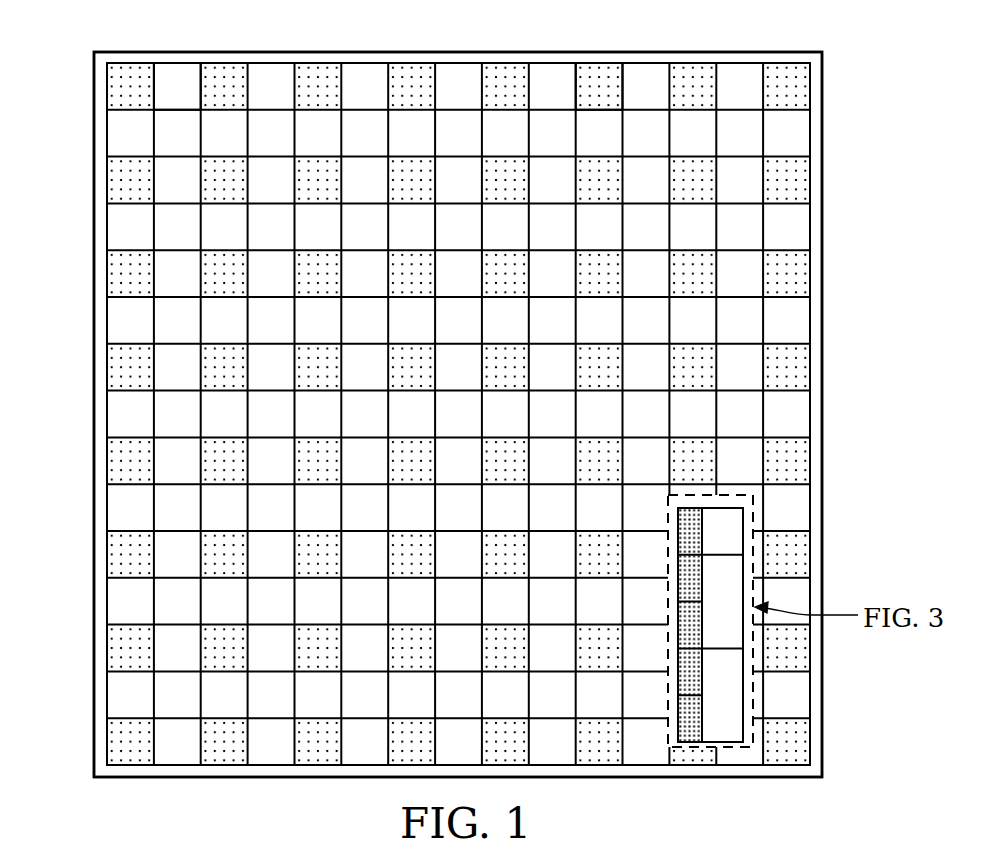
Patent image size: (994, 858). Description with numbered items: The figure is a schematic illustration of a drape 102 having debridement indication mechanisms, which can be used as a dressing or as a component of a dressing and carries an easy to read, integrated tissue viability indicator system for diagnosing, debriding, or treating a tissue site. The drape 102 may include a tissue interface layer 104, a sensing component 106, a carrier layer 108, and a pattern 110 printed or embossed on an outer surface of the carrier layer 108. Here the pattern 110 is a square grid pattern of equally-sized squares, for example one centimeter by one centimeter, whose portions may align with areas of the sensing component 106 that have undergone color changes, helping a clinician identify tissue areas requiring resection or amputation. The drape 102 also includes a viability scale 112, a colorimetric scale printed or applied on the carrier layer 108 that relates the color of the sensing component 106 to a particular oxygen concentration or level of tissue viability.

The drape 102 is at (823, 362).
The tissue interface layer 104 is at (817, 228).
The sensing component 106 is at (600, 72).
The carrier layer 108 is at (118, 413).
The pattern 110 is at (180, 108).
The viability scale 112 is at (748, 680).